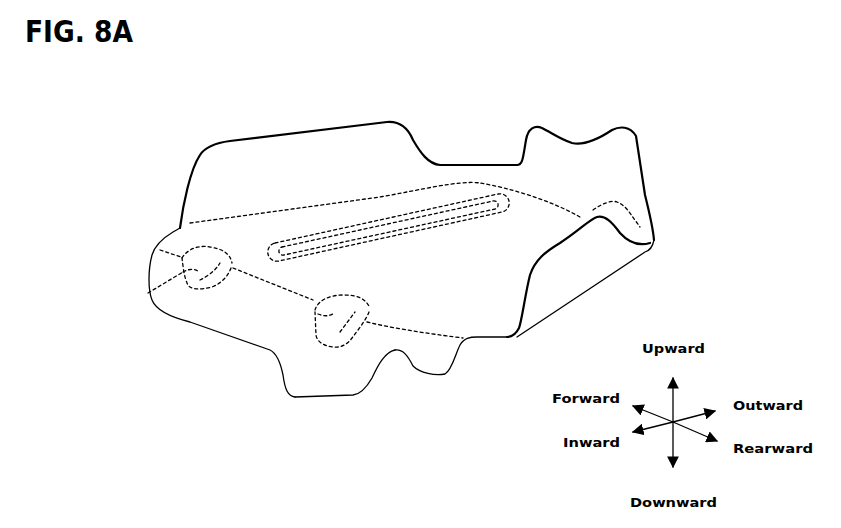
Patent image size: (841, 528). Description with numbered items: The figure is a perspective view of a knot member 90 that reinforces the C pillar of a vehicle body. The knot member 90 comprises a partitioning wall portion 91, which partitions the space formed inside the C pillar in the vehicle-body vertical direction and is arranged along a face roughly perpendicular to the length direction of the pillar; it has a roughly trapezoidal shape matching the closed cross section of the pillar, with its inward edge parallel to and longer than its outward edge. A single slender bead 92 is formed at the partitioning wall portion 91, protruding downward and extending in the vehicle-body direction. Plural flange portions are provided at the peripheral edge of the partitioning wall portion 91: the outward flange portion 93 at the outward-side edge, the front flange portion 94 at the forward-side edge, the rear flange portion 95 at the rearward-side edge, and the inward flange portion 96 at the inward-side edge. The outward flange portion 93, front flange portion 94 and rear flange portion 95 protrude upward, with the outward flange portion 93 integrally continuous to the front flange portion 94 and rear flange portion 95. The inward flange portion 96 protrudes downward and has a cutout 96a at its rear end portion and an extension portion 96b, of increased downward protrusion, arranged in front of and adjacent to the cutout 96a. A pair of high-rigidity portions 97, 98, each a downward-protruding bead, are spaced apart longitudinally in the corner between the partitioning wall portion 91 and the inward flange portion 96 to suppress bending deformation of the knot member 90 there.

The knot member 90 is at (428, 265).
The partitioning wall portion 91 is at (480, 324).
The bead 92 is at (443, 217).
The outward flange portion 93 is at (574, 160).
The front flange portion 94 is at (330, 143).
The rear flange portion 95 is at (580, 273).
The inward flange portion 96 is at (240, 320).
The cutout 96a is at (420, 367).
The extension portion 96b is at (323, 386).
The high-rigidity portion 97 is at (180, 262).
The high-rigidity portion 98 is at (315, 313).